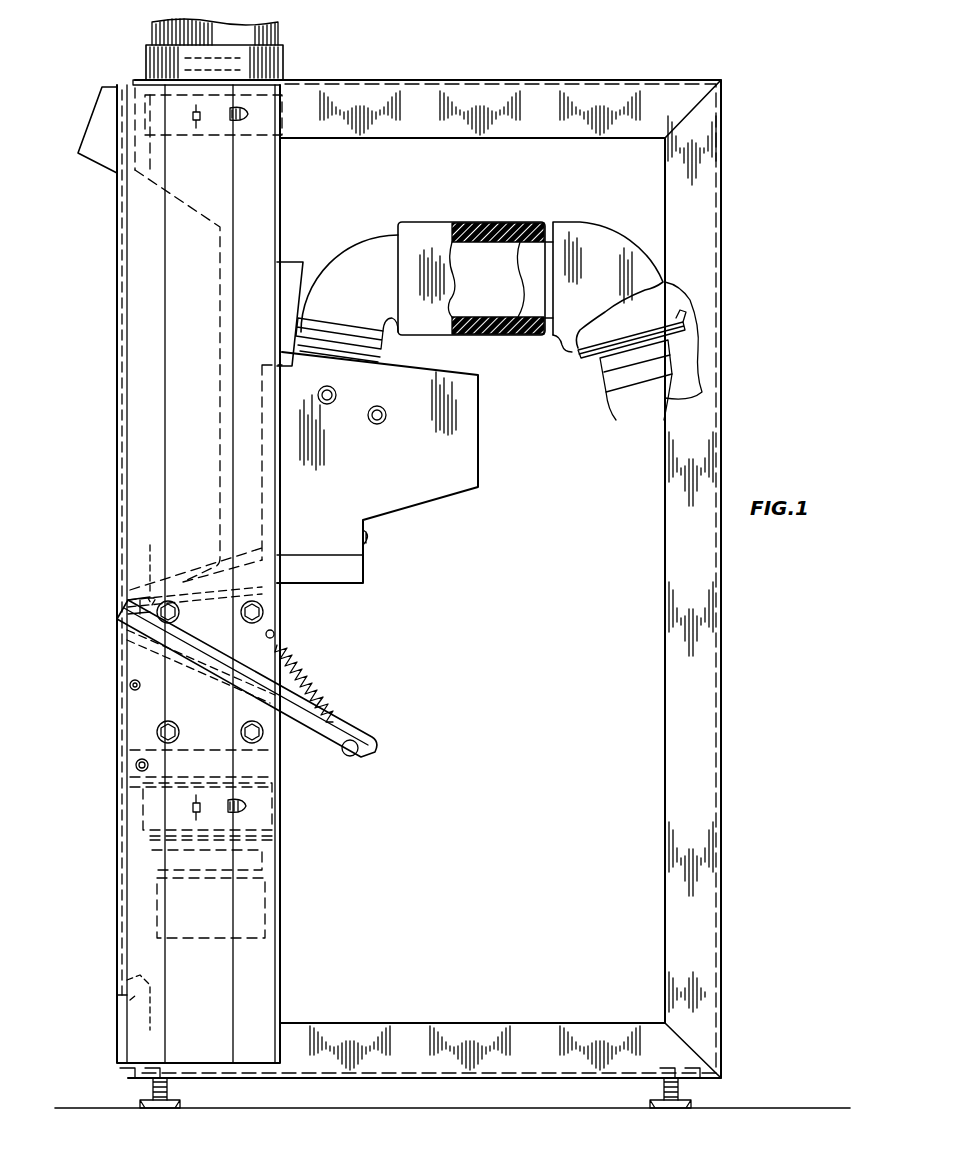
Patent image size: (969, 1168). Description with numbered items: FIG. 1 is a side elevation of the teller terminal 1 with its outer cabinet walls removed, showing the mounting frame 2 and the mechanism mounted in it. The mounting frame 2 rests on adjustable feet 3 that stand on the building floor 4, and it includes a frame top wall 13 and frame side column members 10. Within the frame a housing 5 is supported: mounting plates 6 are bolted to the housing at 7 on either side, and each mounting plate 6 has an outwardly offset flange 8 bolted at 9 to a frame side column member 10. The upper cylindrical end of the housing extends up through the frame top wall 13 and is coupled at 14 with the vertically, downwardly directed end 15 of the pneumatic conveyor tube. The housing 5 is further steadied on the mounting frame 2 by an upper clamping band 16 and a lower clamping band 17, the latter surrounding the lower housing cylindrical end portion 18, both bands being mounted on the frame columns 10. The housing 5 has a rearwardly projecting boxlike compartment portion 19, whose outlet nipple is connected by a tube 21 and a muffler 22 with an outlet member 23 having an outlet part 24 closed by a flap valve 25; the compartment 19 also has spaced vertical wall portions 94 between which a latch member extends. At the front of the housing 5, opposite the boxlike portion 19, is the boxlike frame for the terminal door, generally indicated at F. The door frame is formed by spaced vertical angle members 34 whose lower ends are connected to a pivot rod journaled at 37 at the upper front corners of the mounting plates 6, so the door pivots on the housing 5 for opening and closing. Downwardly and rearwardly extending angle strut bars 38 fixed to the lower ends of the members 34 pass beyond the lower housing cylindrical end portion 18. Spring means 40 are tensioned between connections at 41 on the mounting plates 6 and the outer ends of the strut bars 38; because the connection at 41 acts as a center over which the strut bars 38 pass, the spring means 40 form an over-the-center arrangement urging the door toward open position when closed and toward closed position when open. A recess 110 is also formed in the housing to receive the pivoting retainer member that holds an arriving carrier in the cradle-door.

The teller terminal 1 is at (752, 250).
The mounting frame 2 is at (640, 0).
The adjustable feet 3 is at (148, 1100).
The building floor 4 is at (806, 1108).
The housing 5 is at (408, 480).
The mounting plates 6 is at (255, 777).
The bolts 7 is at (152, 728).
The outwardly offset flange 8 is at (240, 755).
The bolts 9 is at (135, 765).
The frame side column member 10 is at (105, 0).
The frame top wall 13 is at (475, 80).
The coupling 14 is at (265, 57).
The conveyor tube end 15 is at (265, 22).
The upper clamping band 16 is at (285, 105).
The lower clamping band 17 is at (283, 820).
The lower housing cylindrical end portion 18 is at (272, 902).
The boxlike compartment portion 19 is at (362, 466).
The tube 21 is at (348, 290).
The muffler 22 is at (508, 220).
The outlet member 23 is at (598, 262).
The outlet part 24 is at (627, 390).
The flap valve 25 is at (600, 360).
The vertical angle members 34 is at (144, 563).
The pivot journal 37 is at (125, 614).
The angle strut bars 38 is at (308, 730).
The spring means 40 is at (300, 672).
The spring connections 41 is at (278, 630).
The vertical wall portions 94 is at (428, 433).
The recess 110 is at (288, 285).
The door frame F is at (193, 215).